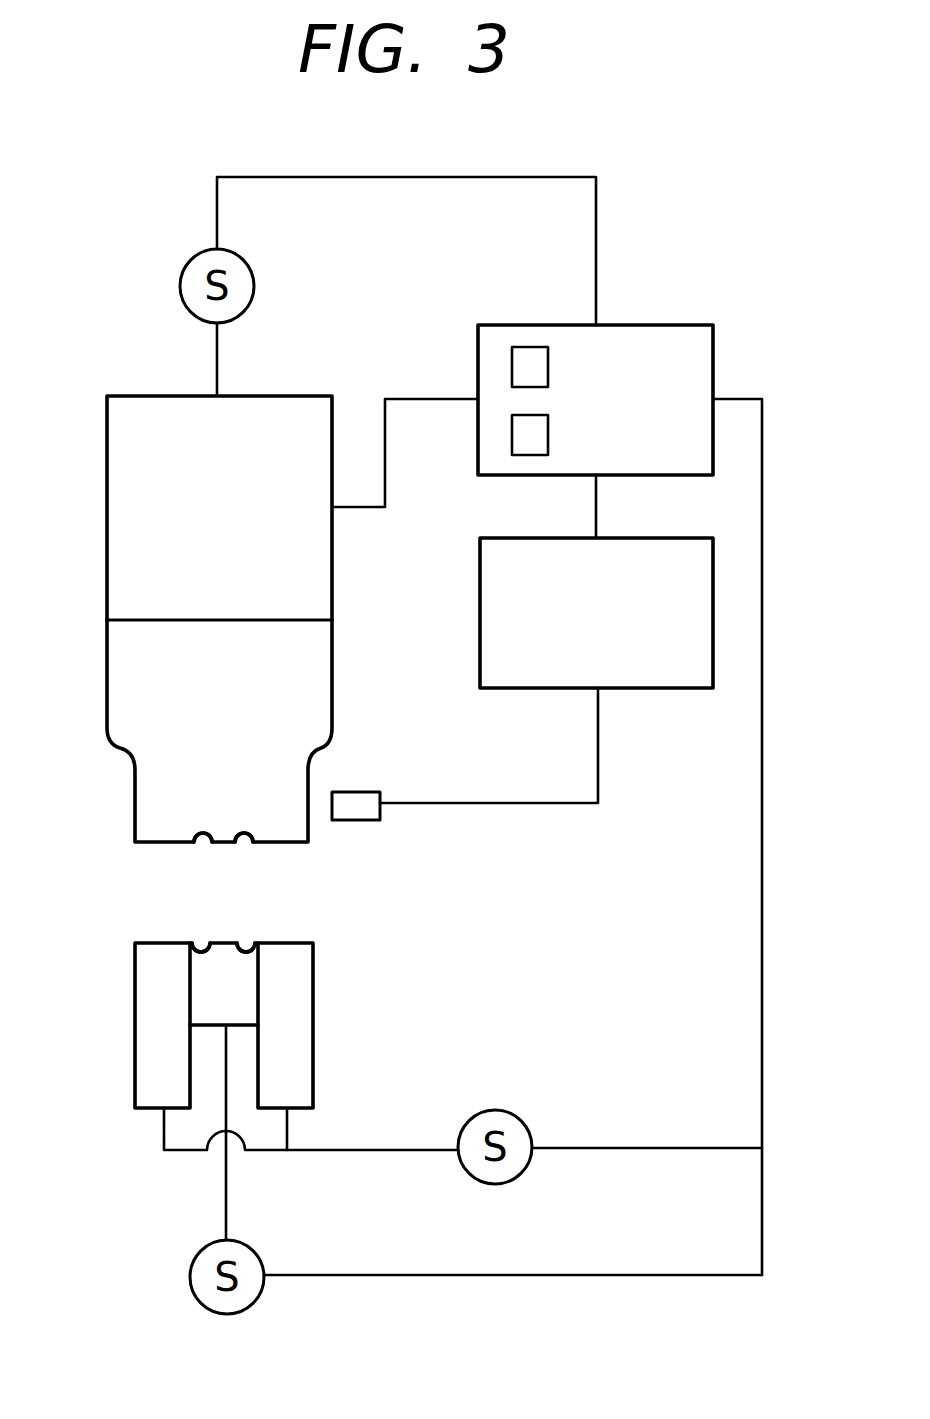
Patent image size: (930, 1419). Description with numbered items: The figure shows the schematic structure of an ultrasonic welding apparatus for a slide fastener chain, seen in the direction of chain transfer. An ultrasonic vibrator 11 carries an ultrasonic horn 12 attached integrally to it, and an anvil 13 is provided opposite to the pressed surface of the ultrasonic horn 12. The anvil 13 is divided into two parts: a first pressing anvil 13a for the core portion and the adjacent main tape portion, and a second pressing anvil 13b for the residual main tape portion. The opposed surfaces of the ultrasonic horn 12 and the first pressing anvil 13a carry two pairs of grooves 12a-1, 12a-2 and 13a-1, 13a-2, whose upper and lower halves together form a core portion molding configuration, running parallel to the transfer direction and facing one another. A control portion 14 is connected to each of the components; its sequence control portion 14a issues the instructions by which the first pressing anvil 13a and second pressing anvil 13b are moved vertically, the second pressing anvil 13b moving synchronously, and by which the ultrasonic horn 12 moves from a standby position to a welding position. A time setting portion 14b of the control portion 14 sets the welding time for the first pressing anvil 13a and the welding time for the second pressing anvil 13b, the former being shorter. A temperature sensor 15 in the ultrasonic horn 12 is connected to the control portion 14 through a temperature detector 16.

The ultrasonic vibrator 11 is at (200, 527).
The ultrasonic horn 12 is at (202, 714).
The groove 12a-1 is at (203, 843).
The groove 12a-2 is at (244, 843).
The anvil 13 is at (212, 1051).
The first pressing anvil 13a is at (210, 985).
The second pressing anvil 13b is at (152, 1062).
The groove 13a-1 is at (201, 943).
The groove 13a-2 is at (246, 943).
The control portion 14 is at (607, 417).
The sequence control portion 14a is at (512, 362).
The time setting portion 14b is at (512, 440).
The temperature sensor 15 is at (360, 792).
The temperature detector 16 is at (580, 629).